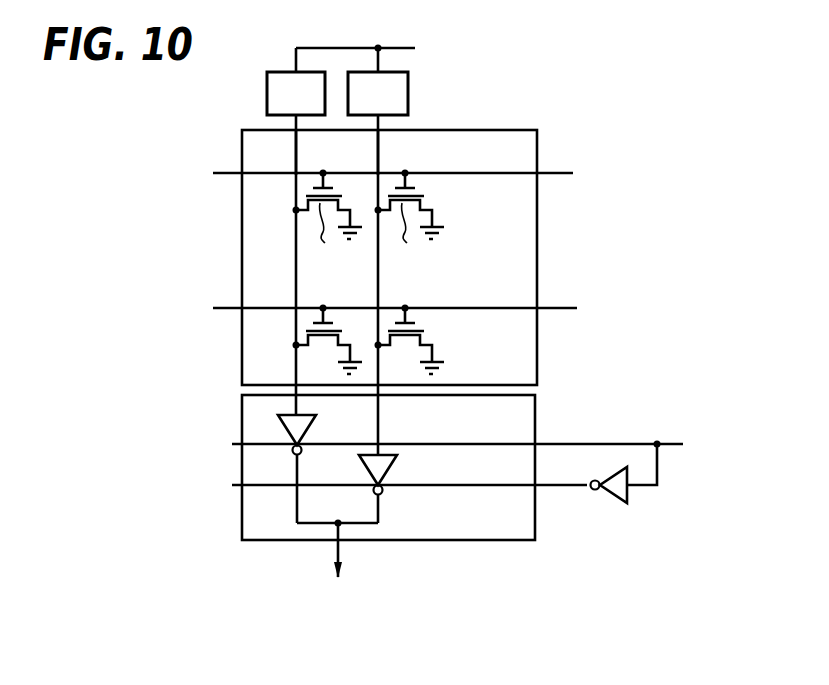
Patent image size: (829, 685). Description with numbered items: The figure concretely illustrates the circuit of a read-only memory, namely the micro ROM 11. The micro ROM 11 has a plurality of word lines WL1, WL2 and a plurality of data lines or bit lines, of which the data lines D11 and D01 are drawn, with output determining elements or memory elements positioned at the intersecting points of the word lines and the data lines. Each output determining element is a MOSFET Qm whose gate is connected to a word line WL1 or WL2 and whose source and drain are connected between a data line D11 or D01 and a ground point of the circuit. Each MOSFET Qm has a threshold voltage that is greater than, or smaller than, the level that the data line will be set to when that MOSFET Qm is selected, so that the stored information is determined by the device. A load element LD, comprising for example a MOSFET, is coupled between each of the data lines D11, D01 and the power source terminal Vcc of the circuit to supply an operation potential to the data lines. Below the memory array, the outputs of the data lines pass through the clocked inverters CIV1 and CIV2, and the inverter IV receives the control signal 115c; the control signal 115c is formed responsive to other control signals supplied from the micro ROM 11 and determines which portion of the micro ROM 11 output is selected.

The micro ROM 11 is at (483, 130).
The control signal 115c is at (673, 443).
The inverter IV is at (602, 494).
The clocked inverter CIV1 is at (312, 418).
The clocked inverter CIV2 is at (395, 462).
The MOSFET Qm is at (449, 349).
The word line WL1 is at (230, 176).
The word line WL2 is at (226, 306).
The data line D11 is at (297, 151).
The data line D01 is at (379, 152).
The power source terminal Vcc is at (377, 49).
The load element LD is at (337, 93).